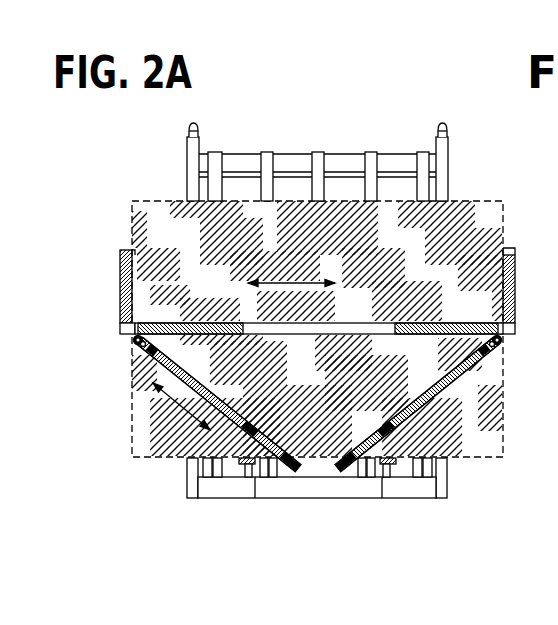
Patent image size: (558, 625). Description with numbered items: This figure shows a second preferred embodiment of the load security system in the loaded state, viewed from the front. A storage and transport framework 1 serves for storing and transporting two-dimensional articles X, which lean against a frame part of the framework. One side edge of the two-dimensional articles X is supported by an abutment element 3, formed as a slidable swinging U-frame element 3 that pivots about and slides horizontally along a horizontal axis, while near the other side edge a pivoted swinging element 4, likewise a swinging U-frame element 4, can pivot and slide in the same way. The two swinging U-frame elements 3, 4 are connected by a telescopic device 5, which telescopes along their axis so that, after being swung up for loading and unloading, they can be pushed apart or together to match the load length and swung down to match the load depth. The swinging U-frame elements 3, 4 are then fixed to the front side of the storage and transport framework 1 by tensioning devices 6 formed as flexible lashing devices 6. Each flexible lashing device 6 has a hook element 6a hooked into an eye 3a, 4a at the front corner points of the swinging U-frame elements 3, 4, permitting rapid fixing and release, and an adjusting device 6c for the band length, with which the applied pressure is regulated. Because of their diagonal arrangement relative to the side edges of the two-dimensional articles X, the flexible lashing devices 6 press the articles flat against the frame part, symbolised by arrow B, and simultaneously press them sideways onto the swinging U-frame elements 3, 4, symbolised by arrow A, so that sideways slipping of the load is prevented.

The storage and transport framework 1 is at (286, 155).
The abutment element 3 is at (516, 280).
The eye 3a is at (514, 333).
The pivoted swinging element 4 is at (120, 293).
The eye 4a is at (133, 339).
The telescopic device 5 is at (270, 335).
The tensioning device 6 is at (222, 402).
The hook element 6a is at (136, 352).
The adjusting device 6c is at (247, 425).
The arrow A is at (300, 283).
The arrow B is at (176, 416).
The two-dimensional articles X is at (503, 201).